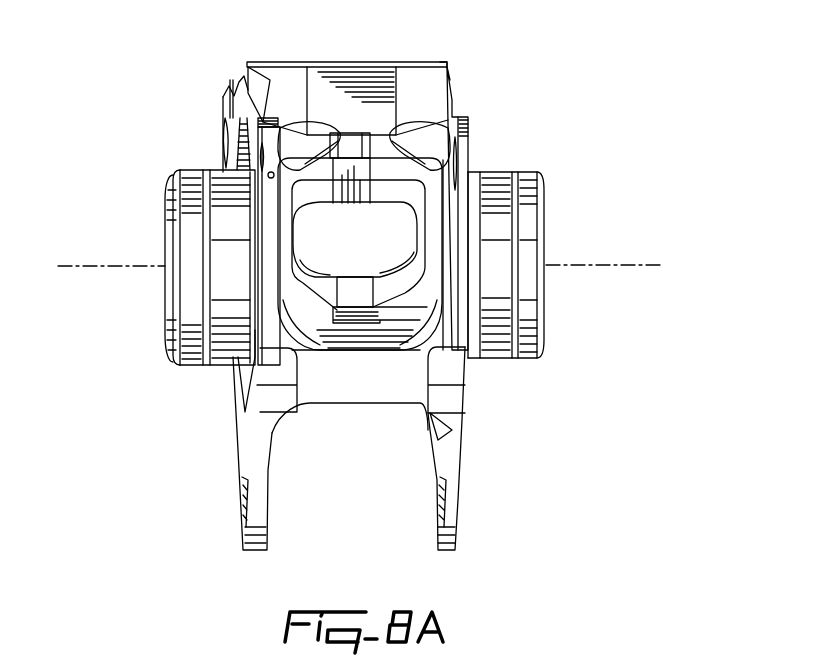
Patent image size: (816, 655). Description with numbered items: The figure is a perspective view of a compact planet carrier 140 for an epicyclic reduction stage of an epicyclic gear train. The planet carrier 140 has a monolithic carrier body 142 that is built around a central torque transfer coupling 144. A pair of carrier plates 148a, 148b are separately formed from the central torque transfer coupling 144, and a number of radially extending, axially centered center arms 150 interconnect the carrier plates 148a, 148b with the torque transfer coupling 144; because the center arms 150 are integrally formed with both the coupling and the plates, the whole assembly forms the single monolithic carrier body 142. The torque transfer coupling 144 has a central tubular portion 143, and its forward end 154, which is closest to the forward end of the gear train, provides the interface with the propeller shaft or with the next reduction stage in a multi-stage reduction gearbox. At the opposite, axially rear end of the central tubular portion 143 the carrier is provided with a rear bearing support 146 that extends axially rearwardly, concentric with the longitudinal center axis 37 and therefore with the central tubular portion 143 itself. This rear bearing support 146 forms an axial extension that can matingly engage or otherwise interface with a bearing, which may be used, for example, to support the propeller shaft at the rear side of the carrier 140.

The longitudinal center axis 37 is at (607, 262).
The planet carrier 140 is at (356, 306).
The monolithic carrier body 142 is at (462, 90).
The central tubular portion 143 is at (232, 358).
The central torque transfer coupling 144 is at (174, 170).
The rear bearing support 146 is at (495, 358).
The carrier plate 148a is at (257, 95).
The carrier plate 148b is at (452, 66).
The center arm 150 is at (358, 127).
The forward end 154 is at (172, 258).